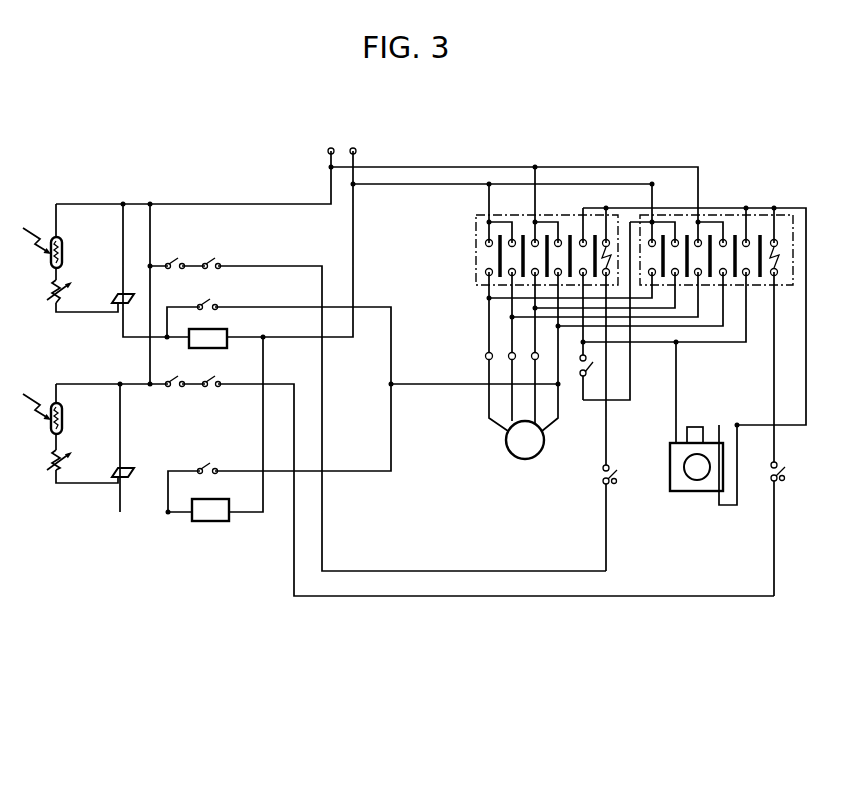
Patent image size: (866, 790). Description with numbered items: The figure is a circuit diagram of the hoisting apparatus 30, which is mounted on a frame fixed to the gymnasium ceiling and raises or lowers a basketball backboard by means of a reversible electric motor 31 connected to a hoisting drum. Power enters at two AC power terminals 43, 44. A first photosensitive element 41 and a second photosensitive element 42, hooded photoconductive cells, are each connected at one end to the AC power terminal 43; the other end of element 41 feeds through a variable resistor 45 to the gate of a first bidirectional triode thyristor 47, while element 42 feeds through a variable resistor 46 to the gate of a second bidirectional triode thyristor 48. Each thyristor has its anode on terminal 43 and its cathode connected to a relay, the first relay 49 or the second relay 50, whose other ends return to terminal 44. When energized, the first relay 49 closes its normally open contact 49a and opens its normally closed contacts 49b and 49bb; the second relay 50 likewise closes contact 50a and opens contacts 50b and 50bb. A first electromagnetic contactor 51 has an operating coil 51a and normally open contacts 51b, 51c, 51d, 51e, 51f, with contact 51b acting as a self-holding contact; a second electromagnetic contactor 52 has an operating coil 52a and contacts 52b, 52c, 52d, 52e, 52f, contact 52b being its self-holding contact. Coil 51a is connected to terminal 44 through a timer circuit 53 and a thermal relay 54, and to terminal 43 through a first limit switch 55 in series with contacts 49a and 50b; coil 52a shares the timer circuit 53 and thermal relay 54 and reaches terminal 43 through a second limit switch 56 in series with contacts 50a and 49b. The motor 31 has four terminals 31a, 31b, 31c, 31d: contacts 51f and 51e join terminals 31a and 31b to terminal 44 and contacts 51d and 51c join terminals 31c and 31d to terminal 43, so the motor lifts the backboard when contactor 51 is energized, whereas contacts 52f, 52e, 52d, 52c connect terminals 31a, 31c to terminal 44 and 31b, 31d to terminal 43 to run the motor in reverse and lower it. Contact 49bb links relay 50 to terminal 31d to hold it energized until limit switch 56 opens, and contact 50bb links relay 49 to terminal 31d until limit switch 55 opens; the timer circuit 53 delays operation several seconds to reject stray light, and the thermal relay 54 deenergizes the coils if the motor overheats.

The hoisting apparatus 30 is at (430, 483).
The reversible electric motor 31 is at (523, 422).
The motor terminal 31a is at (493, 425).
The motor terminal 31b is at (510, 398).
The motor terminal 31c is at (538, 410).
The motor terminal 31d is at (550, 430).
The first photosensitive element 41 is at (61, 250).
The second photosensitive element 42 is at (61, 425).
The AC power terminal 43 is at (329, 149).
The AC power terminal 44 is at (355, 131).
The variable resistor 45 is at (48, 292).
The variable resistor 46 is at (48, 462).
The first bidirectional triode thyristor 47 is at (118, 294).
The second bidirectional triode thyristor 48 is at (118, 466).
The first relay 49 is at (215, 348).
The normally open contact 49a is at (212, 262).
The normally closed contact 49b is at (170, 387).
The normally closed contact 49bb is at (205, 468).
The second relay 50 is at (211, 521).
The normally open contact 50a is at (212, 387).
The normally closed contact 50b is at (176, 253).
The normally closed contact 50bb is at (206, 305).
The first electromagnetic contactor 51 is at (543, 213).
The operating coil 51a is at (607, 207).
The normally open contact 51b is at (586, 239).
The normally open contact 51c is at (562, 239).
The normally open contact 51d is at (539, 239).
The normally open contact 51e is at (512, 238).
The normally open contact 51f is at (486, 240).
The second electromagnetic contactor 52 is at (749, 228).
The operating coil 52a is at (778, 240).
The normally open contact 52b is at (751, 238).
The normally open contact 52c is at (728, 238).
The normally open contact 52d is at (703, 238).
The normally open contact 52e is at (680, 238).
The normally open contact 52f is at (656, 238).
The timer circuit 53 is at (697, 492).
The thermal relay 54 is at (589, 372).
The first limit switch 55 is at (612, 476).
The second limit switch 56 is at (786, 472).